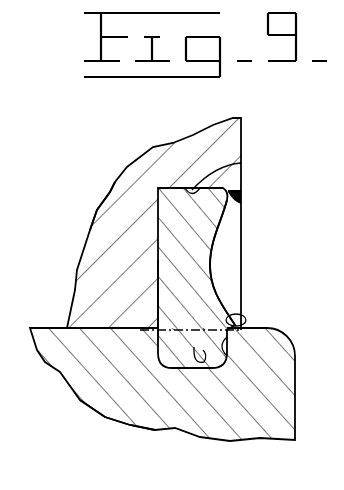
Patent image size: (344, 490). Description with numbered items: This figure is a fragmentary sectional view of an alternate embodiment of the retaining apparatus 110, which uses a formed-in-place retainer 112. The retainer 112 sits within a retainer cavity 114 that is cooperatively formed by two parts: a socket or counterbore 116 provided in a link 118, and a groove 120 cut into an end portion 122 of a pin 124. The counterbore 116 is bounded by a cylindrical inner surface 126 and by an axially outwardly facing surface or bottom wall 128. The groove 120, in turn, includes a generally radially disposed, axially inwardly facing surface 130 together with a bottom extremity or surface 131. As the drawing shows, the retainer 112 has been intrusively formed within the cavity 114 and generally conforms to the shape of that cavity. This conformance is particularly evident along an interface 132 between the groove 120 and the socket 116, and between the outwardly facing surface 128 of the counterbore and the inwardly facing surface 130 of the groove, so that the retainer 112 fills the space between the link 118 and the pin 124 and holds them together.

The retaining apparatus 110 is at (100, 155).
The formed-in-place retainer 112 is at (215, 262).
The retainer cavity 114 is at (238, 197).
The socket or counterbore 116 is at (160, 213).
The link 118 is at (108, 192).
The groove 120 is at (203, 362).
The end portion 122 is at (108, 407).
The pin 124 is at (75, 393).
The cylindrical inner surface 126 is at (241, 163).
The bottom wall 128 is at (165, 298).
The axially inwardly facing surface 130 is at (221, 341).
The bottom extremity 131 is at (156, 338).
The interface 132 is at (246, 316).